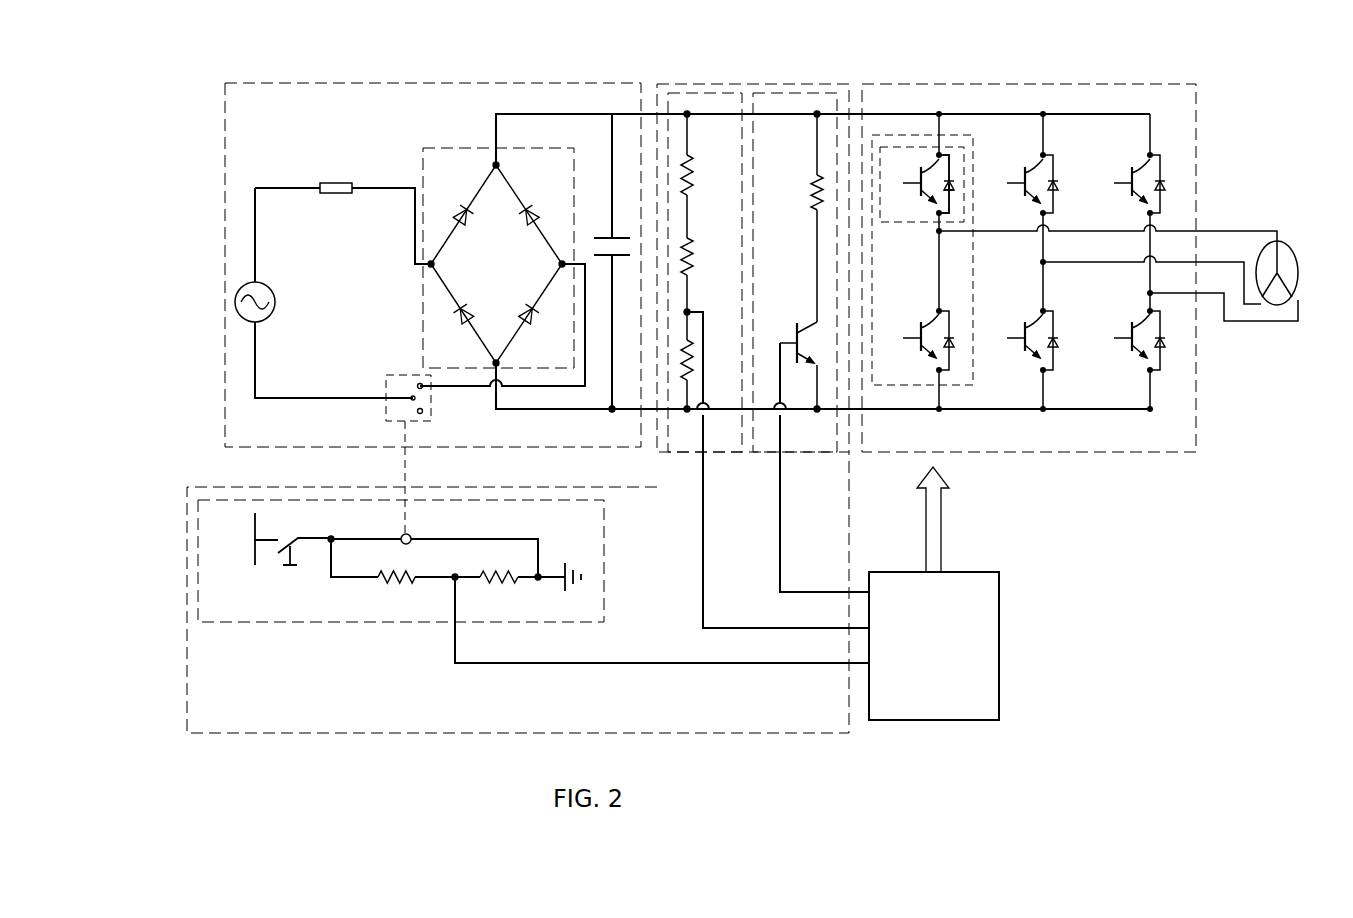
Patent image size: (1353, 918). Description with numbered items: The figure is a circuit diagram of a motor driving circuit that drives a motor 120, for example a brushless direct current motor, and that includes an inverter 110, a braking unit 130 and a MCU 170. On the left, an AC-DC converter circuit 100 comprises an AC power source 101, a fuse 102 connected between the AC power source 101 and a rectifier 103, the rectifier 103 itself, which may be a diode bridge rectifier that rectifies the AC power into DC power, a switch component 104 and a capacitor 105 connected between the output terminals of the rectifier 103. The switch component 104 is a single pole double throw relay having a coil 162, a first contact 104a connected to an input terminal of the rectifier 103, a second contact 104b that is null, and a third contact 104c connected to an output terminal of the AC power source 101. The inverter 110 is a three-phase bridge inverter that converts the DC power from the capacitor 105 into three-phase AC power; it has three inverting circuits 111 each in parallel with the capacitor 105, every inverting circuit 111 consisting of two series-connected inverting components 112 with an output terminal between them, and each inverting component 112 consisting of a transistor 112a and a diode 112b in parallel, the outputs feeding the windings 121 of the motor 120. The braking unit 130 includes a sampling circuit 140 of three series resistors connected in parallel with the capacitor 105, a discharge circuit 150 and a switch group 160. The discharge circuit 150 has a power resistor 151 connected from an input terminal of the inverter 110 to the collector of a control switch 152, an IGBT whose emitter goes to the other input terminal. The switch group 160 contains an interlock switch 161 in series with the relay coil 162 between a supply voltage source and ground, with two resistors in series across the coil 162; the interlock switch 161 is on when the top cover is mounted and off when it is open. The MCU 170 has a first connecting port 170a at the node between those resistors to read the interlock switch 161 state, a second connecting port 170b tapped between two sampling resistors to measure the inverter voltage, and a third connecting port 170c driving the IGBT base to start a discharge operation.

The AC-DC converter circuit 100 is at (362, 83).
The AC power source 101 is at (238, 290).
The fuse 102 is at (332, 183).
The rectifier 103 is at (450, 148).
The switch component 104 is at (395, 428).
The first contact 104a is at (420, 383).
The second contact 104b is at (423, 413).
The third contact 104c is at (395, 398).
The capacitor 105 is at (605, 237).
The inverter 110 is at (1125, 84).
The inverting circuit 111 is at (960, 180).
The inverting component 112 is at (925, 148).
The transistor 112a is at (932, 200).
The diode 112b is at (955, 186).
The motor 120 is at (1282, 240).
The motor windings 121 is at (1291, 298).
The braking unit 130 is at (725, 84).
The sampling circuit 140 is at (675, 93).
The discharge circuit 150 is at (785, 93).
The power resistor 151 is at (806, 210).
The control switch 152 is at (795, 337).
The switch group 160 is at (245, 608).
The interlock switch 161 is at (292, 556).
The coil 162 is at (412, 535).
The MCU 170 is at (1000, 622).
The first connecting port 170a is at (662, 620).
The second connecting port 170b is at (778, 470).
The third connecting port 170c is at (821, 467).